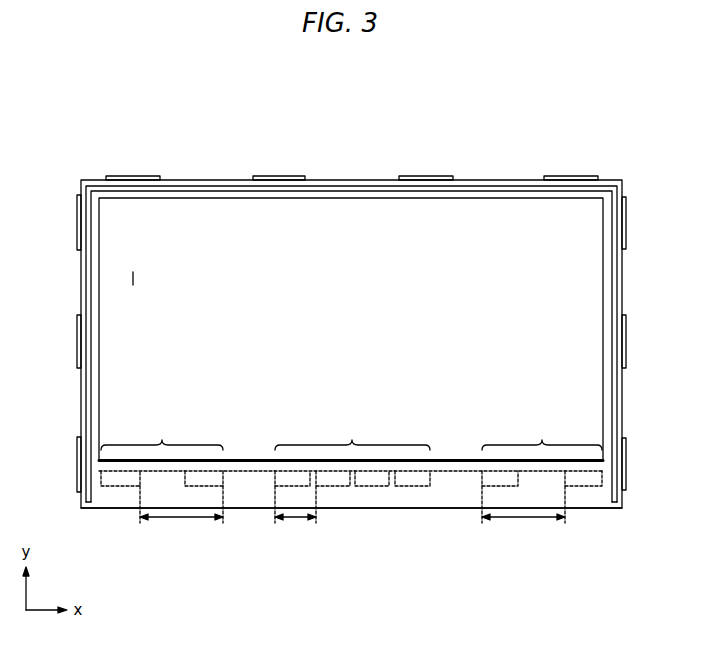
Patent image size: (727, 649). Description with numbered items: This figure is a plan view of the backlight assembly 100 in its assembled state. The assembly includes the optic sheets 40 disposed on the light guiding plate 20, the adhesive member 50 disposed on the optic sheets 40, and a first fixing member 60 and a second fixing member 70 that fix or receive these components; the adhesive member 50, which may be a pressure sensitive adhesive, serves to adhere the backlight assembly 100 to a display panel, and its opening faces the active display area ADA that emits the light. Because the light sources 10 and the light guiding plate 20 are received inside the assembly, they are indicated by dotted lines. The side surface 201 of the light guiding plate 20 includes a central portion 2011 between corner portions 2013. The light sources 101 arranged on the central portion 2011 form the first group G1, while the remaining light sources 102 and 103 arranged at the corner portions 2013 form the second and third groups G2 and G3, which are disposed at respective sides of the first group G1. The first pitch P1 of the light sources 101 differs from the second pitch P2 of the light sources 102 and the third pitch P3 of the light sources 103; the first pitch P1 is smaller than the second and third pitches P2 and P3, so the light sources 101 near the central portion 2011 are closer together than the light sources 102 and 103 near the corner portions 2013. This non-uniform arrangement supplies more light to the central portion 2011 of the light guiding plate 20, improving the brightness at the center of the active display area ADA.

The backlight assembly 100 is at (332, 146).
The light source 10 is at (604, 484).
The light guiding plate 20 is at (253, 466).
The optic sheets 40 is at (493, 220).
The adhesive member 50 is at (607, 280).
The first fixing member 60 is at (617, 261).
The second fixing member 70 is at (624, 300).
The light sources of the first group 101 is at (378, 486).
The light sources of the second group 102 is at (121, 488).
The light sources of the third group 103 is at (582, 488).
The side surface 201 is at (453, 473).
The central portion 2011 is at (347, 475).
The corner portions 2013 is at (101, 471).
The active display area ADA is at (133, 278).
The first group G1 is at (352, 435).
The second group G2 is at (162, 435).
The third group G3 is at (542, 435).
The first pitch P1 is at (295, 513).
The second pitch P2 is at (181, 513).
The third pitch P3 is at (523, 513).